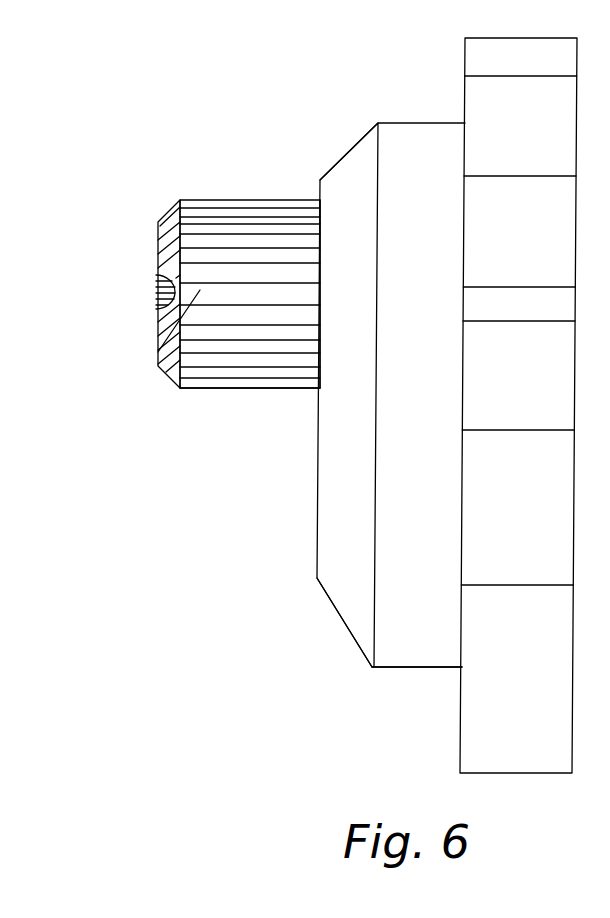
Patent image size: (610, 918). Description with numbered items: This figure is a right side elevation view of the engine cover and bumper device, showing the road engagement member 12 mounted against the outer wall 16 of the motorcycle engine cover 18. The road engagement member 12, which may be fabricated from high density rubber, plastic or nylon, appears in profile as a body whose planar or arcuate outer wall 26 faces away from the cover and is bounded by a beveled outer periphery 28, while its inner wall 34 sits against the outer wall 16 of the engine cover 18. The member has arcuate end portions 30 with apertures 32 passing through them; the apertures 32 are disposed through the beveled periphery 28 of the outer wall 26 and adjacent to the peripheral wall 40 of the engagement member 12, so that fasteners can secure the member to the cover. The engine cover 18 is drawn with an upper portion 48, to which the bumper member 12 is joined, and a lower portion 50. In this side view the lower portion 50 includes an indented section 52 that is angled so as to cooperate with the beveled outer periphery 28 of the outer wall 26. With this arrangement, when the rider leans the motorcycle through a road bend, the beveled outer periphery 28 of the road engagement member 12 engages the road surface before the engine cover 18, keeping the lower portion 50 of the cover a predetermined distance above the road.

The road engagement member 12 is at (218, 200).
The outer wall 16 is at (316, 497).
The motorcycle engine cover 18 is at (460, 708).
The outer wall 26 is at (157, 247).
The beveled outer periphery 28 is at (167, 210).
The arcuate end portions 30 is at (158, 352).
The apertures 32 is at (156, 297).
The inner wall 34 is at (322, 275).
The peripheral wall 40 is at (257, 388).
The upper portion 48 is at (318, 190).
The lower portion 50 is at (388, 668).
The indented section 52 is at (335, 607).